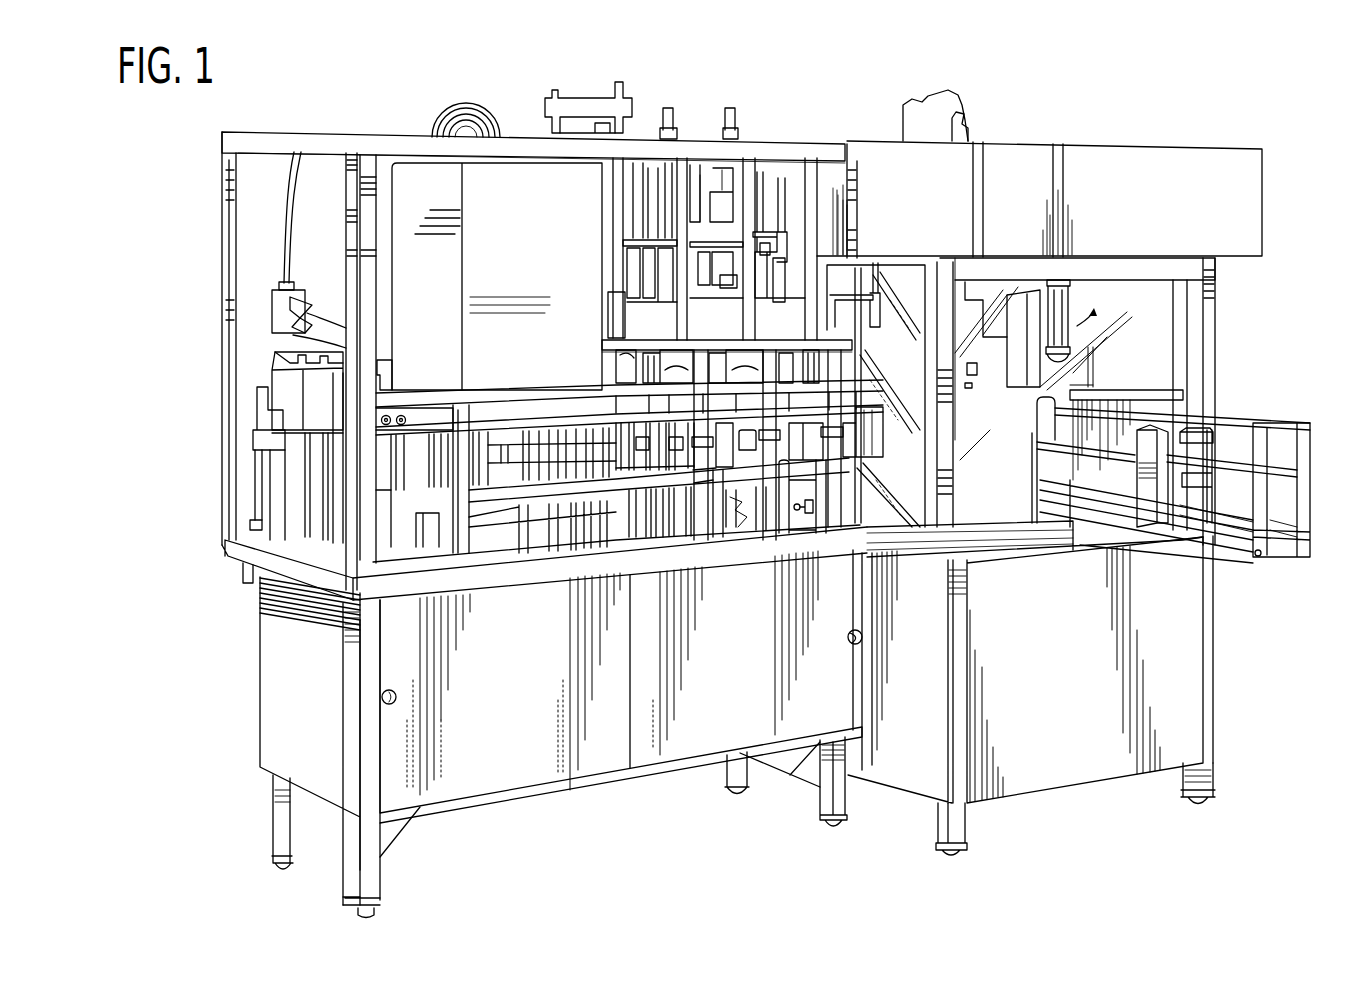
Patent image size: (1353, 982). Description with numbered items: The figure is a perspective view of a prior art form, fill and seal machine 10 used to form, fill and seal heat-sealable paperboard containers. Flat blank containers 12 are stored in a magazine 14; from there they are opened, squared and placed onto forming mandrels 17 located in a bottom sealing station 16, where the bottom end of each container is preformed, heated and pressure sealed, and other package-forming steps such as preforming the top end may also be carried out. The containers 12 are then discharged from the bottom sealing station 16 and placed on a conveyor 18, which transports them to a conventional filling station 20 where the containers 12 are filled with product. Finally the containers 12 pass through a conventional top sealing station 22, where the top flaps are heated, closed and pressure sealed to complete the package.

The machine 10 is at (818, 128).
The flat blank containers 12 is at (1177, 409).
The magazine 14 is at (1288, 423).
The bottom sealing station 16 is at (1118, 140).
The forming mandrels 17 is at (1057, 300).
The conveyor 18 is at (587, 553).
The filling station 20 is at (697, 128).
The top sealing station 22 is at (410, 117).